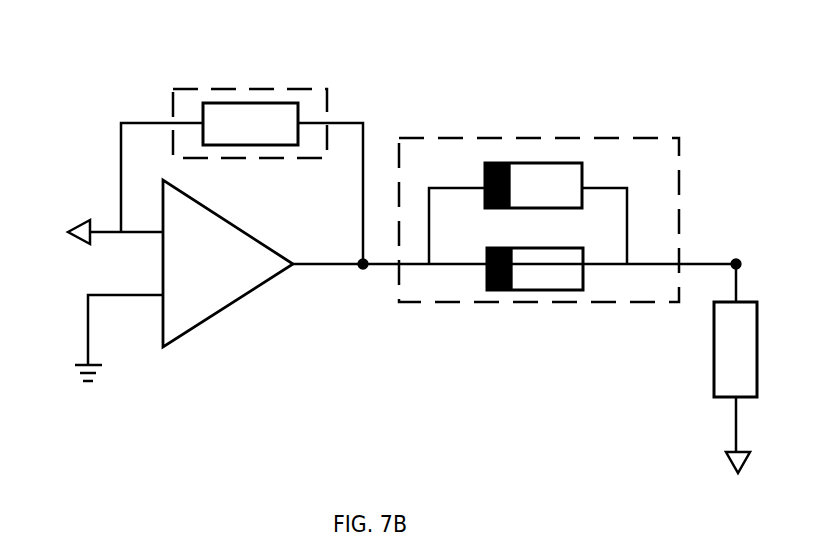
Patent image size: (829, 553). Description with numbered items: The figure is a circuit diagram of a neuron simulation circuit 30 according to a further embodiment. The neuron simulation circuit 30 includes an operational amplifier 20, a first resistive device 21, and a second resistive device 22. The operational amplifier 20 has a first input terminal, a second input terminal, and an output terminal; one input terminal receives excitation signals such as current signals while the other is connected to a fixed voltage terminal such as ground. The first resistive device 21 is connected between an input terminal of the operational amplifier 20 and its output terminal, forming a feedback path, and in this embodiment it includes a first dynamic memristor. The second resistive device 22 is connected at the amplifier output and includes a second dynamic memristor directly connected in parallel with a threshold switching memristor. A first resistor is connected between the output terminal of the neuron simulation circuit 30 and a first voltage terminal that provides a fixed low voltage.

The neuron simulation circuit 30 is at (438, 50).
The operational amplifier 20 is at (228, 263).
The first resistive device 21 is at (297, 90).
The second resistive device 22 is at (645, 135).